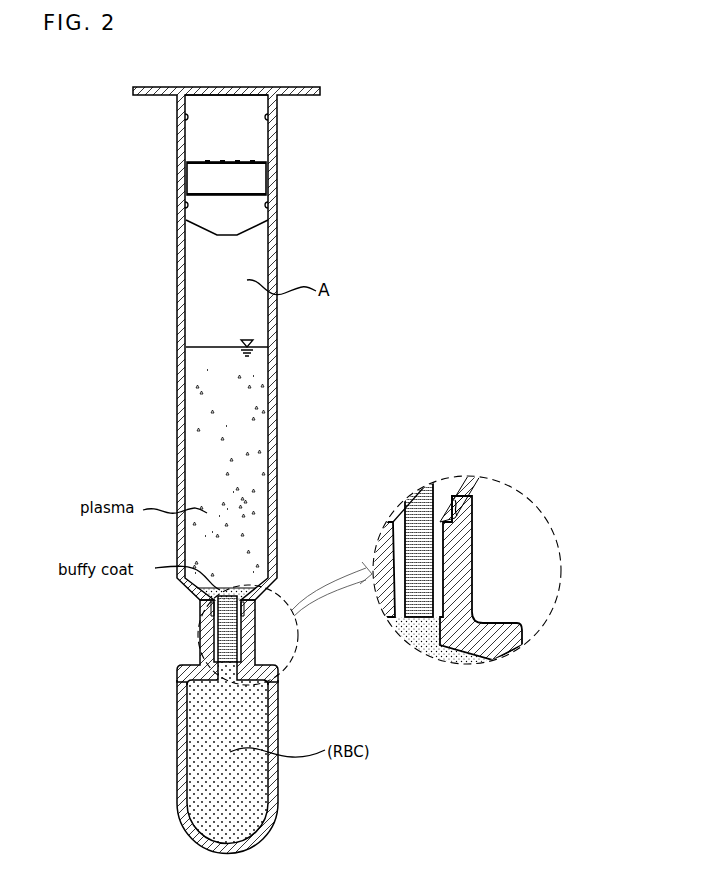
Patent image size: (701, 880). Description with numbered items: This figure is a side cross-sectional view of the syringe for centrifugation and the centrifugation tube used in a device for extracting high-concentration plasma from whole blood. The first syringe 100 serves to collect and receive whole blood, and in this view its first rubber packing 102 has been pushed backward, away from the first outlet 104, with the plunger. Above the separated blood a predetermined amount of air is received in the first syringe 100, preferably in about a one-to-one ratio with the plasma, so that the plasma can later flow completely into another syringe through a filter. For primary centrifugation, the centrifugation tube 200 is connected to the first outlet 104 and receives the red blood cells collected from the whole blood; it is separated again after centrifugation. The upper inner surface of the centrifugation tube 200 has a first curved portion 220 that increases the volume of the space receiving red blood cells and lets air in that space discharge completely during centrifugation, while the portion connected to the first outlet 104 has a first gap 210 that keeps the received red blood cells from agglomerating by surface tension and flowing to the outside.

The first syringe 100 is at (145, 386).
The first rubber packing 102 is at (248, 214).
The first outlet 104 is at (216, 634).
The centrifugation tube 200 is at (283, 837).
The first gap 210 is at (462, 503).
The first curved portion 220 is at (201, 683).